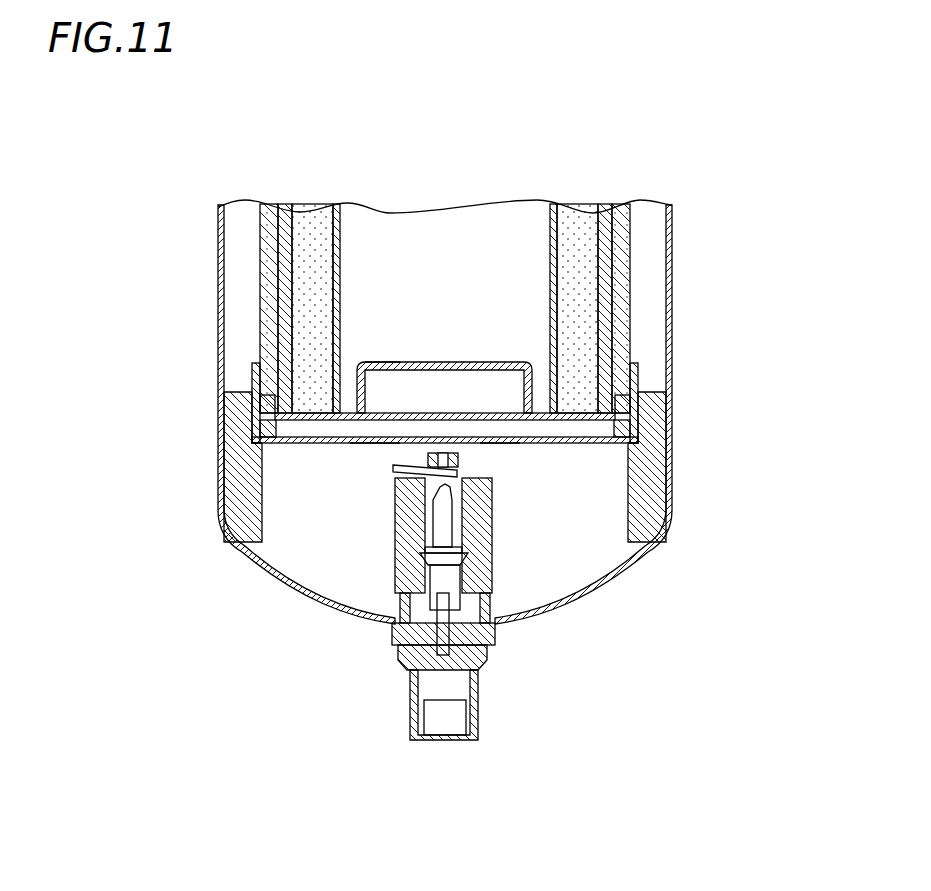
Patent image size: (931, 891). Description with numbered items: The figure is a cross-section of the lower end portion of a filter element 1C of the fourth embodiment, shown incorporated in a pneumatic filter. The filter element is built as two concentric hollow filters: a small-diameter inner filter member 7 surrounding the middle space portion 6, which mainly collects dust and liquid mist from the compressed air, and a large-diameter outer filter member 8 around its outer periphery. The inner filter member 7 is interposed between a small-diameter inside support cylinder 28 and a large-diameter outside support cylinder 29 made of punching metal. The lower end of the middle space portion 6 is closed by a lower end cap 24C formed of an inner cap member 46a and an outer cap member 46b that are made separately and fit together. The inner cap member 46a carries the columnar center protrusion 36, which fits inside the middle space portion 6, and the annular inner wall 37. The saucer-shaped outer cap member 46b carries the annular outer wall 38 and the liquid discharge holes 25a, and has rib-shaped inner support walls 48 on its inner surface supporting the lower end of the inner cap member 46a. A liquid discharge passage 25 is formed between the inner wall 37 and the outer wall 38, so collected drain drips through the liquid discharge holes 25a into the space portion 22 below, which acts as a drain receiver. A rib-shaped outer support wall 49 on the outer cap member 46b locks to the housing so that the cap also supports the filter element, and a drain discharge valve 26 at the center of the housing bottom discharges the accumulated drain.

The filter element 1C is at (556, 172).
The space portion 22 is at (555, 582).
The outside support cylinder 29 is at (262, 320).
The outer filter member 8 is at (622, 283).
The inner filter member 7 is at (580, 235).
The inside support cylinder 28 is at (333, 240).
The middle space portion 6 is at (458, 256).
The center protrusion 36 is at (410, 362).
The inner cap member 46a is at (488, 350).
The inner wall 37 is at (615, 400).
The outer wall 38 is at (632, 372).
The liquid discharge passage 25 is at (255, 406).
The liquid discharge hole 25a is at (310, 445).
The outer cap member 46b is at (500, 457).
The inner support wall 48 is at (258, 432).
The outer support wall 49 is at (248, 505).
The lower end cap 24C is at (367, 468).
The drain discharge valve 26 is at (490, 708).